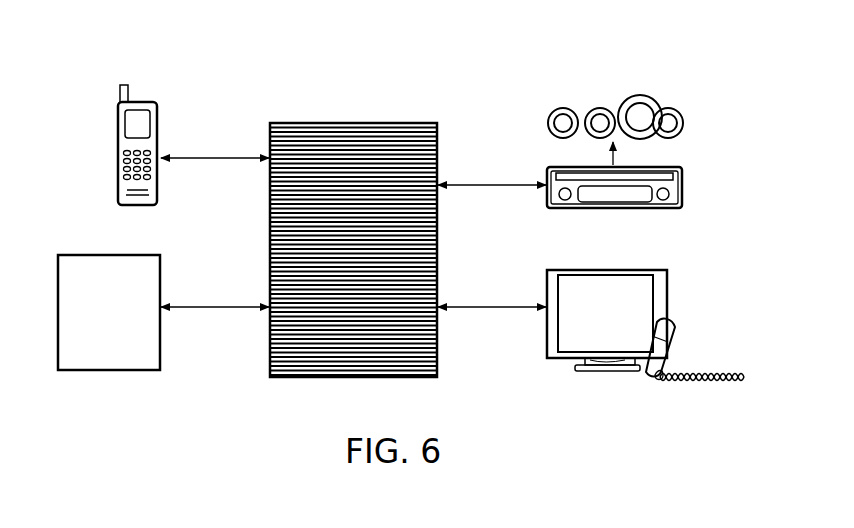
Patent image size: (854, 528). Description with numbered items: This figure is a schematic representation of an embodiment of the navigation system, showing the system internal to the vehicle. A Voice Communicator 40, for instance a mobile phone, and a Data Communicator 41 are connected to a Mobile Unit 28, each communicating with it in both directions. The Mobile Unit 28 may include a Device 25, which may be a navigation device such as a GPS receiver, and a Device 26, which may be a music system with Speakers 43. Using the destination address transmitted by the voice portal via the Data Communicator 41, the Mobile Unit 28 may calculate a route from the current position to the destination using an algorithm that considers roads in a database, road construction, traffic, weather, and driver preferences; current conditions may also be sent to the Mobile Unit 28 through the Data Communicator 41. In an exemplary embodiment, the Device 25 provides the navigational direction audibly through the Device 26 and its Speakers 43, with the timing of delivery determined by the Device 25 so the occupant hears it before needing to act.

The device 25 is at (670, 322).
The device 26 is at (547, 168).
The mobile unit 28 is at (372, 263).
The voice communicator 40 is at (158, 102).
The data communicator 41 is at (125, 330).
The speakers 43 is at (614, 108).